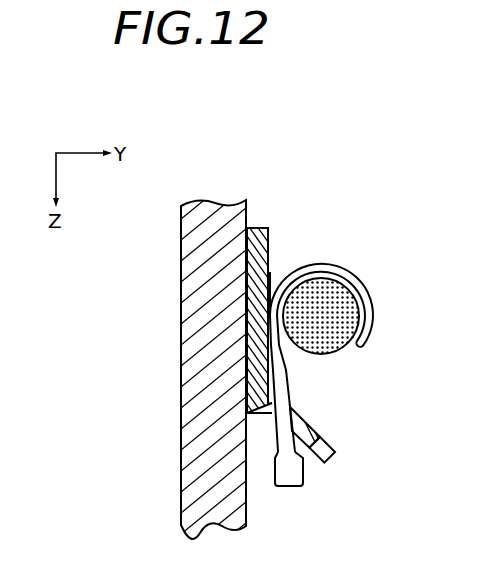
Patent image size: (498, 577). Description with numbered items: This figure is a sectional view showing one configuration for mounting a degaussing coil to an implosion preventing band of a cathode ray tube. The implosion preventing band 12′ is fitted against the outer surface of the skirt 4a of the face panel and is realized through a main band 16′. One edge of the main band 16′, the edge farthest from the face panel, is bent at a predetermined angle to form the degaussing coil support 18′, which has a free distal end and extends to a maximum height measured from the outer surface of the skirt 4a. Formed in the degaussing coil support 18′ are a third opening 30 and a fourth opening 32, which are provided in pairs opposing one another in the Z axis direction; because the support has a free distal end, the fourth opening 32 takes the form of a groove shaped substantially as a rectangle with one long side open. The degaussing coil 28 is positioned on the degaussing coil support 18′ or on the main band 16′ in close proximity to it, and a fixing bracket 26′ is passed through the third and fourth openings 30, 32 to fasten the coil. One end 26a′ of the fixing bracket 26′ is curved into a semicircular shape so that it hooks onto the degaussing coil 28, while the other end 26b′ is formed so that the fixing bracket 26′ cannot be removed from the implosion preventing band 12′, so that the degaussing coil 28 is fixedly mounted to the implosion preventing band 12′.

The skirt 4a is at (199, 268).
The implosion preventing band 12′ is at (277, 237).
The main band 16′ is at (270, 272).
The fixing bracket 26′ is at (262, 382).
The one end of the fixing bracket 26a′ is at (371, 299).
The other end of the fixing bracket 26b′ is at (304, 486).
The degaussing coil 28 is at (351, 329).
The degaussing coil support 18′ is at (318, 428).
The third opening 30 is at (252, 412).
The fourth opening 32 is at (337, 452).